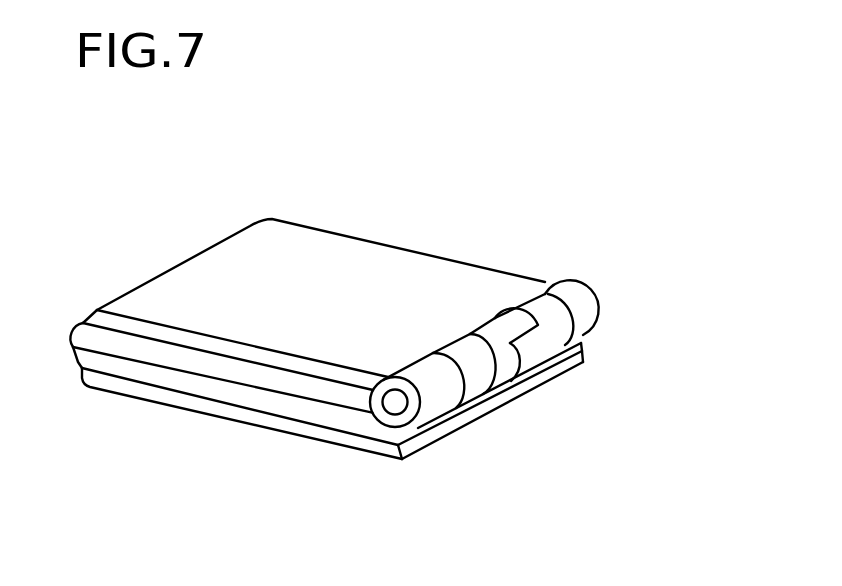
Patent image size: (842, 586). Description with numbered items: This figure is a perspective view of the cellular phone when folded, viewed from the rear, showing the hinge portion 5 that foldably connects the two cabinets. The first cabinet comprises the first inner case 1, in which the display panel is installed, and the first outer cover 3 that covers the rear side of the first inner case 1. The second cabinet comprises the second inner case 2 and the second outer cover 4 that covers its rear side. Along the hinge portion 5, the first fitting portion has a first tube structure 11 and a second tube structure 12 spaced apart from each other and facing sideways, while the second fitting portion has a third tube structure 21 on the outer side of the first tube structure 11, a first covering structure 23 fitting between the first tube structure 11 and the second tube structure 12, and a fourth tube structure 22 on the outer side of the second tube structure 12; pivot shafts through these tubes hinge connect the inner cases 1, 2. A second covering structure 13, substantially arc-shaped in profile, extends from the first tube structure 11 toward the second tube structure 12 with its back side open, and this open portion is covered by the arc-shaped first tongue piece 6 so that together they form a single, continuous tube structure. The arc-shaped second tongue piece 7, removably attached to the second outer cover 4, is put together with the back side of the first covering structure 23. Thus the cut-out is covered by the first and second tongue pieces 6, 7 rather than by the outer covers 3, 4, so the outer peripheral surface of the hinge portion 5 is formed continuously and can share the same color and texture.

The first inner case 1 is at (85, 337).
The second inner case 2 is at (158, 384).
The first outer cover 3 is at (287, 250).
The second outer cover 4 is at (241, 420).
The hinge portion 5 is at (518, 338).
The first tongue piece 6 is at (507, 310).
The second tongue piece 7 is at (497, 378).
The first tube structure 11 is at (566, 345).
The second tube structure 12 is at (470, 388).
The second covering structure 13 is at (548, 362).
The third tube structure 21 is at (580, 307).
The fourth tube structure 22 is at (440, 398).
The first covering structure 23 is at (472, 331).